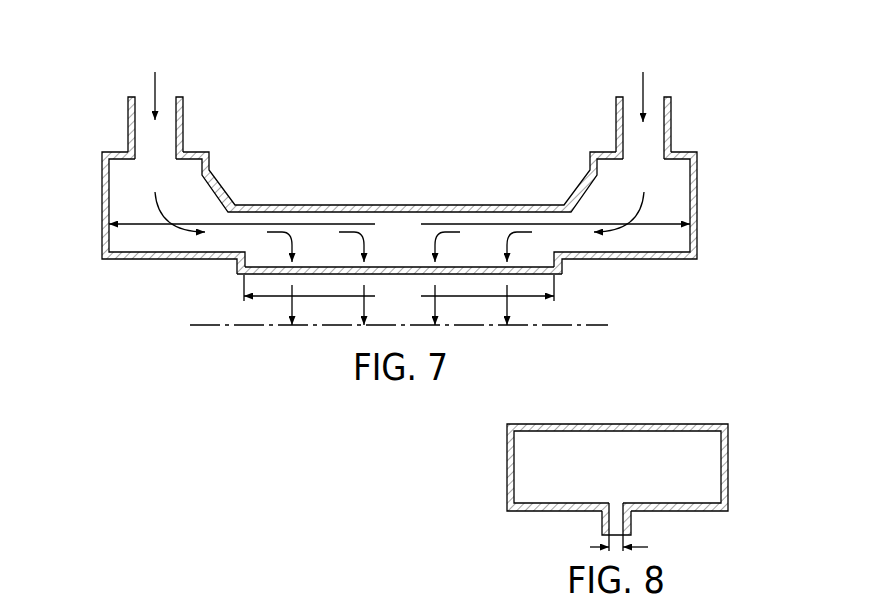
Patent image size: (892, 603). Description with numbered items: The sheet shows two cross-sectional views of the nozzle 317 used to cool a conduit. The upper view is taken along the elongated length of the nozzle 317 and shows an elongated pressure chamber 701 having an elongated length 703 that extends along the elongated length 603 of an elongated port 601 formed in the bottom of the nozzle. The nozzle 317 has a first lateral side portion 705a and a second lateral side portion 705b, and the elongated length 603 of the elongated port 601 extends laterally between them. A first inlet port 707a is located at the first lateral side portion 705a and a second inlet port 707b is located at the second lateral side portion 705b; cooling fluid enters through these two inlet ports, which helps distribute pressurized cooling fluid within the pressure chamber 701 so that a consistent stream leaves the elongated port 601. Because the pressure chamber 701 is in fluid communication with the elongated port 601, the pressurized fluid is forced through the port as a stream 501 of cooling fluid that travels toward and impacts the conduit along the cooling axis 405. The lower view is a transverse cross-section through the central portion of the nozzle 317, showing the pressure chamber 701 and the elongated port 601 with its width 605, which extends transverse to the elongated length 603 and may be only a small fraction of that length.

In FIG. 7, the nozzle 317 is at (683, 93).
In FIG. 8, the nozzle 317 is at (744, 422).
In FIG. 7, the cooling axis 405 is at (600, 325).
In FIG. 7, the stream of cooling fluid 501 is at (508, 302).
In FIG. 7, the elongated port 601 is at (277, 274).
In FIG. 8, the elongated port 601 is at (602, 538).
In FIG. 7, the elongated length 603 is at (399, 291).
In FIG. 8, the width 605 is at (640, 548).
In FIG. 7, the elongated pressure chamber 701 is at (523, 222).
In FIG. 8, the elongated pressure chamber 701 is at (696, 470).
In FIG. 7, the elongated length 703 is at (399, 238).
In FIG. 7, the first lateral side portion 705a is at (102, 202).
In FIG. 7, the second lateral side portion 705b is at (697, 205).
In FIG. 7, the first inlet port 707a is at (183, 128).
In FIG. 7, the second inlet port 707b is at (671, 128).